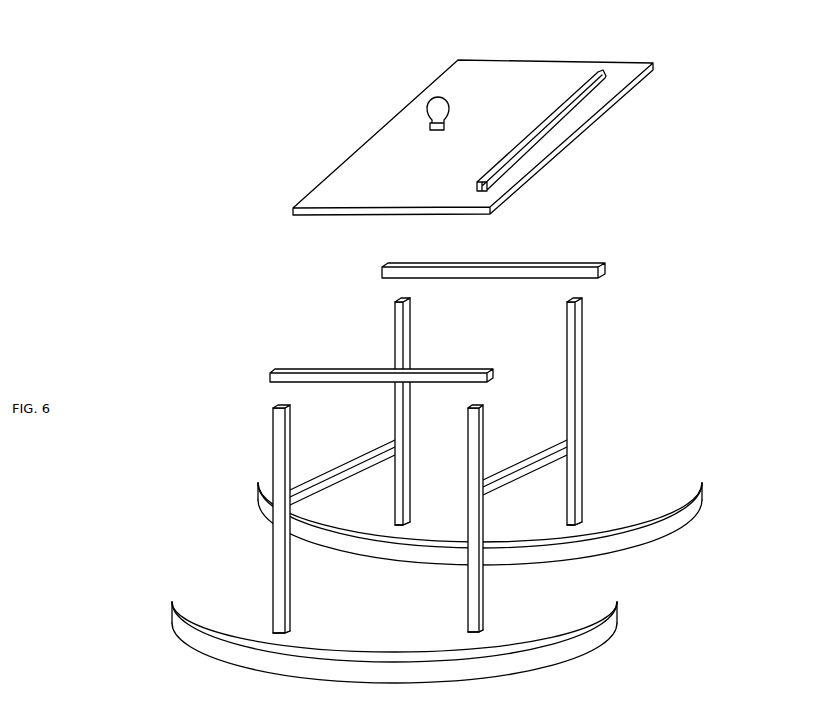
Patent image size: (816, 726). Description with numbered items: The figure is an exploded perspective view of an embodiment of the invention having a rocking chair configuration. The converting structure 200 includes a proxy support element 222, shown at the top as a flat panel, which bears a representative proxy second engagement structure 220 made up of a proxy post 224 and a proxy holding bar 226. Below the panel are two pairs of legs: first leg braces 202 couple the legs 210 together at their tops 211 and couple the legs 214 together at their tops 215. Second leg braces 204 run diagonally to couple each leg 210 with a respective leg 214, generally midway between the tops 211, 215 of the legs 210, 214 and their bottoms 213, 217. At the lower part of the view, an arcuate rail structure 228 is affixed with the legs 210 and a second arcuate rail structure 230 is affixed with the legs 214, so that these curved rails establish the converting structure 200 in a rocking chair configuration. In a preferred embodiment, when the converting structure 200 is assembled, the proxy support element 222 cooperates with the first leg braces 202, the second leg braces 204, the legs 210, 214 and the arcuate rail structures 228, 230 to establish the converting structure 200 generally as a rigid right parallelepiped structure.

The converting structure 200 is at (708, 60).
The first leg braces 202 is at (532, 263).
The second leg braces 204 is at (345, 466).
The legs 210 is at (411, 326).
The tops of legs 210 211 is at (395, 300).
The bottoms of legs 210 213 is at (411, 523).
The legs 214 is at (273, 466).
The tops of legs 214 215 is at (276, 408).
The bottoms of legs 214 217 is at (291, 631).
The proxy second engagement structure 220 is at (473, 113).
The proxy support element 222 is at (607, 112).
The proxy post 224 is at (447, 93).
The proxy holding bar 226 is at (588, 78).
The arcuate rail structure 228 is at (632, 547).
The arcuate rail structure 230 is at (617, 635).